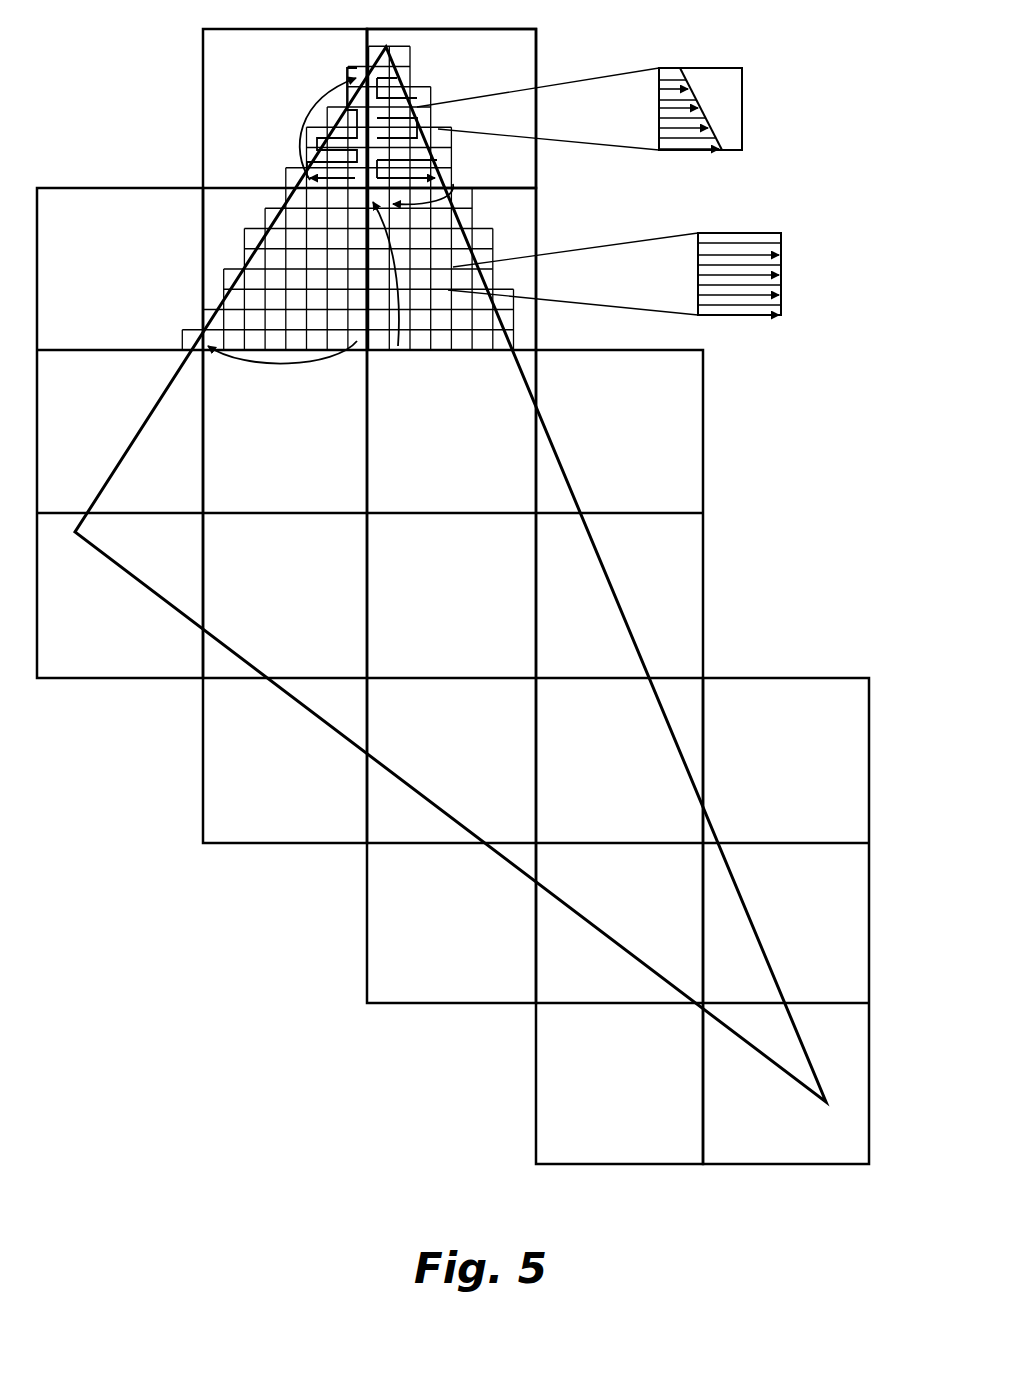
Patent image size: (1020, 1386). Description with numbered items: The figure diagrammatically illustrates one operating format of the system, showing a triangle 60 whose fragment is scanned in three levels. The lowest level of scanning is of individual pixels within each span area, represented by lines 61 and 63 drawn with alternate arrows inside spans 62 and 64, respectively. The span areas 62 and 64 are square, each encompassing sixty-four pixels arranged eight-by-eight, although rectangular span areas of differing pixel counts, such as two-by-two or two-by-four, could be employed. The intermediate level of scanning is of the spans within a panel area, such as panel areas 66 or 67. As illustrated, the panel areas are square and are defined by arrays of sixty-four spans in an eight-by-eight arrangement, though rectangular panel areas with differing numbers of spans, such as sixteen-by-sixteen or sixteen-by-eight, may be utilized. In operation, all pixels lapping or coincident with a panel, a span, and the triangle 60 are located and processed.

The triangle 60 is at (667, 714).
The lines 61 is at (670, 85).
The span area 62 is at (621, 78).
The lines 63 is at (732, 270).
The span area 64 is at (654, 243).
The panel area 66 is at (536, 57).
The panel area 67 is at (536, 225).